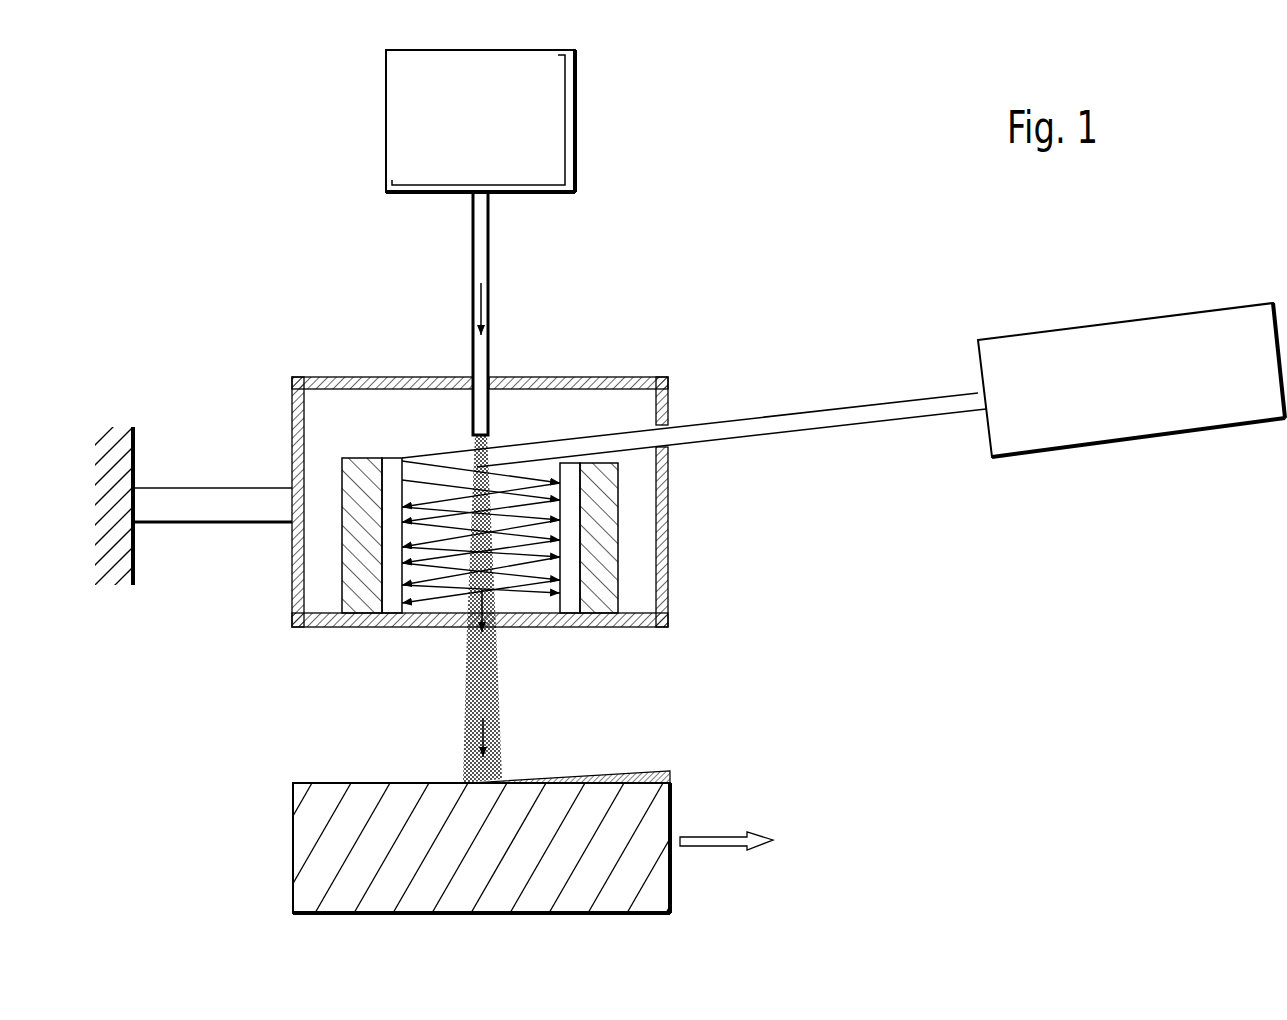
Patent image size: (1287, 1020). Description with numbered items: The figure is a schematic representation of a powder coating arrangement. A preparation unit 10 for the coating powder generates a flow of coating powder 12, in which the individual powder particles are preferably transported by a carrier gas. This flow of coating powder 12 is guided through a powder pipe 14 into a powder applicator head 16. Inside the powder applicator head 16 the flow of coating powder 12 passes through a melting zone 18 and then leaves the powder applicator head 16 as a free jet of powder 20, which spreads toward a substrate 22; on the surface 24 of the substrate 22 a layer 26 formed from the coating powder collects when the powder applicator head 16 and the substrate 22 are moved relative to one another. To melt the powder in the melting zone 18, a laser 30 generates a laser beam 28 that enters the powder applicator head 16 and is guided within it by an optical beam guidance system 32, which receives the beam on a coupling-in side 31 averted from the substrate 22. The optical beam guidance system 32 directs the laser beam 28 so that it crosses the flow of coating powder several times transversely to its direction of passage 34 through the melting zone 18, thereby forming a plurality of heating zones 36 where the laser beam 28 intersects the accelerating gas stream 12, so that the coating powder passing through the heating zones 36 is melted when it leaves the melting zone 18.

The preparation unit 10 is at (556, 117).
The flow of coating powder 12 is at (489, 312).
The powder pipe 14 is at (480, 251).
The powder applicator head 16 is at (678, 595).
The melting zone 18 is at (540, 513).
The free jet of powder 20 is at (492, 695).
The substrate 22 is at (312, 838).
The surface 24 is at (321, 781).
The layer 26 is at (655, 769).
The laser beam 28 is at (870, 423).
The laser 30 is at (1198, 430).
The coupling-in side 31 is at (391, 452).
The optical beam guidance system 32 is at (340, 558).
The direction of passage 34 is at (497, 735).
The heating zones 36 is at (478, 573).